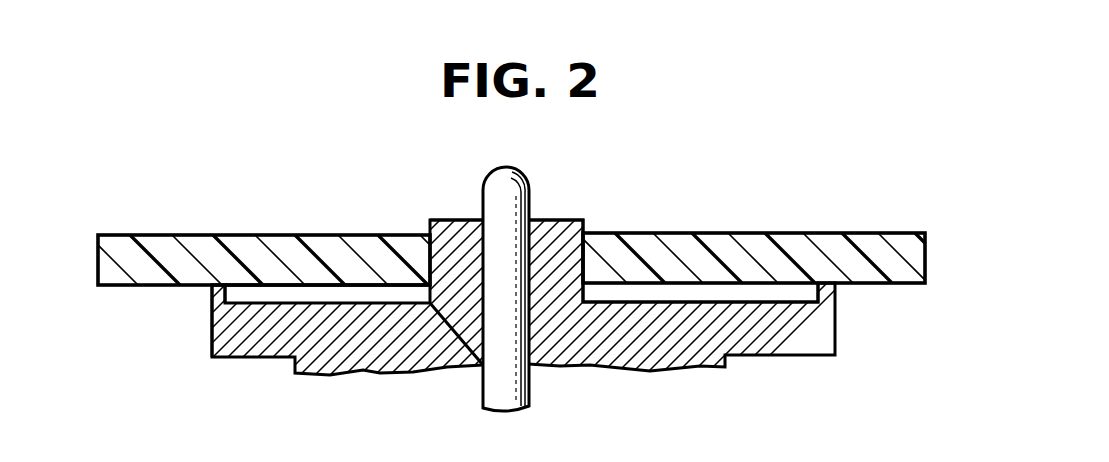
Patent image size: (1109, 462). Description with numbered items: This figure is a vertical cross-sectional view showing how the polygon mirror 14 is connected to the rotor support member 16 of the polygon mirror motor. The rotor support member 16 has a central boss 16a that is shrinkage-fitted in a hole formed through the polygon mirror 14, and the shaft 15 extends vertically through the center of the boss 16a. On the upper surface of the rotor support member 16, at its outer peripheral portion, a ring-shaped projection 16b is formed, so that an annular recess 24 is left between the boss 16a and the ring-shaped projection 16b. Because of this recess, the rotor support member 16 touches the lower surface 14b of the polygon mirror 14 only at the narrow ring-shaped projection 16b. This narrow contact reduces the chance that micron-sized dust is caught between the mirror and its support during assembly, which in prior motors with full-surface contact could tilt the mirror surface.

The polygon mirror 14 is at (822, 243).
The lower surface of the polygon mirror 14b is at (356, 303).
The shaft 15 is at (529, 190).
The rotor support member 16 is at (317, 302).
The boss 16a is at (452, 226).
The ring-shaped projection 16b is at (209, 300).
The annular recess 24 is at (708, 288).